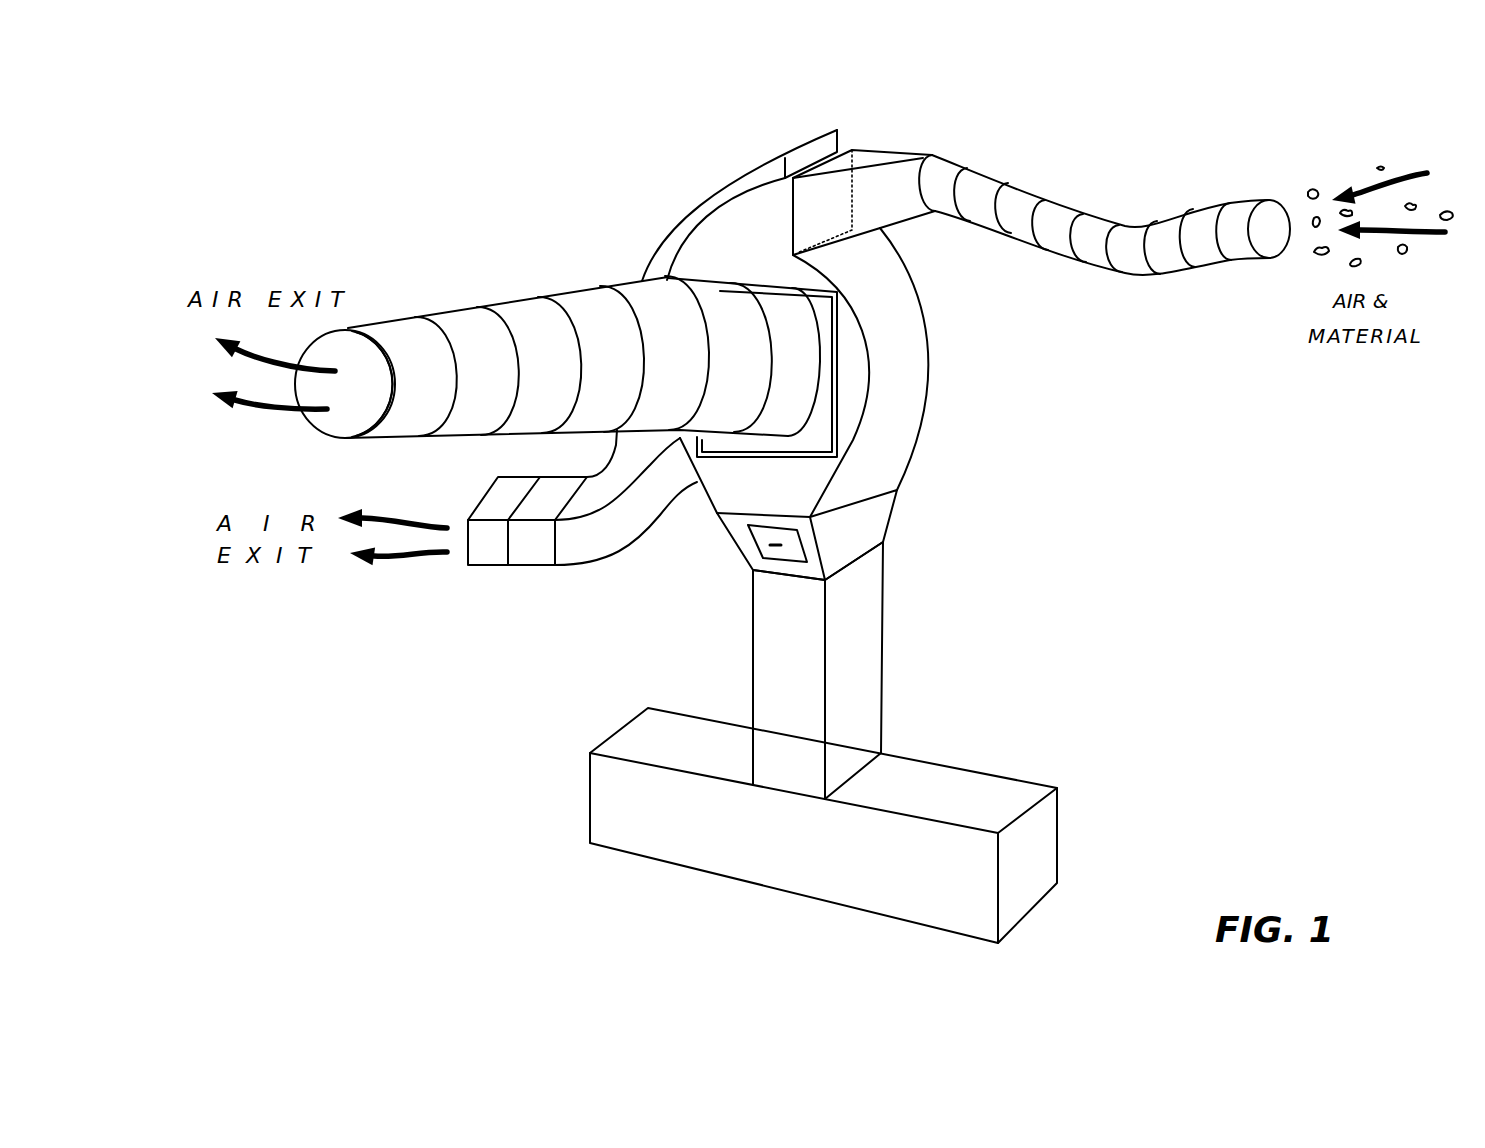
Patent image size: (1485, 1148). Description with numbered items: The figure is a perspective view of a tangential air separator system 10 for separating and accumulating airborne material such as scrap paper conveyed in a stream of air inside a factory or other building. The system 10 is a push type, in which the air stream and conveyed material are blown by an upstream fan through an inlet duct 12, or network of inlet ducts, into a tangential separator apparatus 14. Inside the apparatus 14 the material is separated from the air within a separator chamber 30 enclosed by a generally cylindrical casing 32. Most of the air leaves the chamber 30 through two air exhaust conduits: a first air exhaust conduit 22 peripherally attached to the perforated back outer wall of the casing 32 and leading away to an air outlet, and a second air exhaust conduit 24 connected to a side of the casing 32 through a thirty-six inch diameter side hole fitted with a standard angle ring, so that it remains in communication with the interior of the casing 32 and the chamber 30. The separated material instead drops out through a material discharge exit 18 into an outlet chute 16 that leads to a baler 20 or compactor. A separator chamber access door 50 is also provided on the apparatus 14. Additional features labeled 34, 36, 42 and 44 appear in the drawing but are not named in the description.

The tangential air separator system 10 is at (487, 157).
The inlet duct 12 is at (1165, 228).
The tangential separator apparatus 14 is at (843, 355).
The outlet chute 16 is at (853, 640).
The material discharge exit 18 is at (847, 563).
The baler 20 is at (992, 797).
The first air exhaust conduit 22 is at (585, 545).
The second air exhaust conduit 24 is at (517, 322).
The separator chamber 30 is at (792, 497).
The cylindrical casing 32 is at (872, 400).
The inlet opening 34 is at (822, 208).
The deflector plate 36 is at (772, 190).
The inlet door 42 is at (880, 226).
The discharge opening 44 is at (760, 573).
The separator chamber access door 50 is at (750, 533).